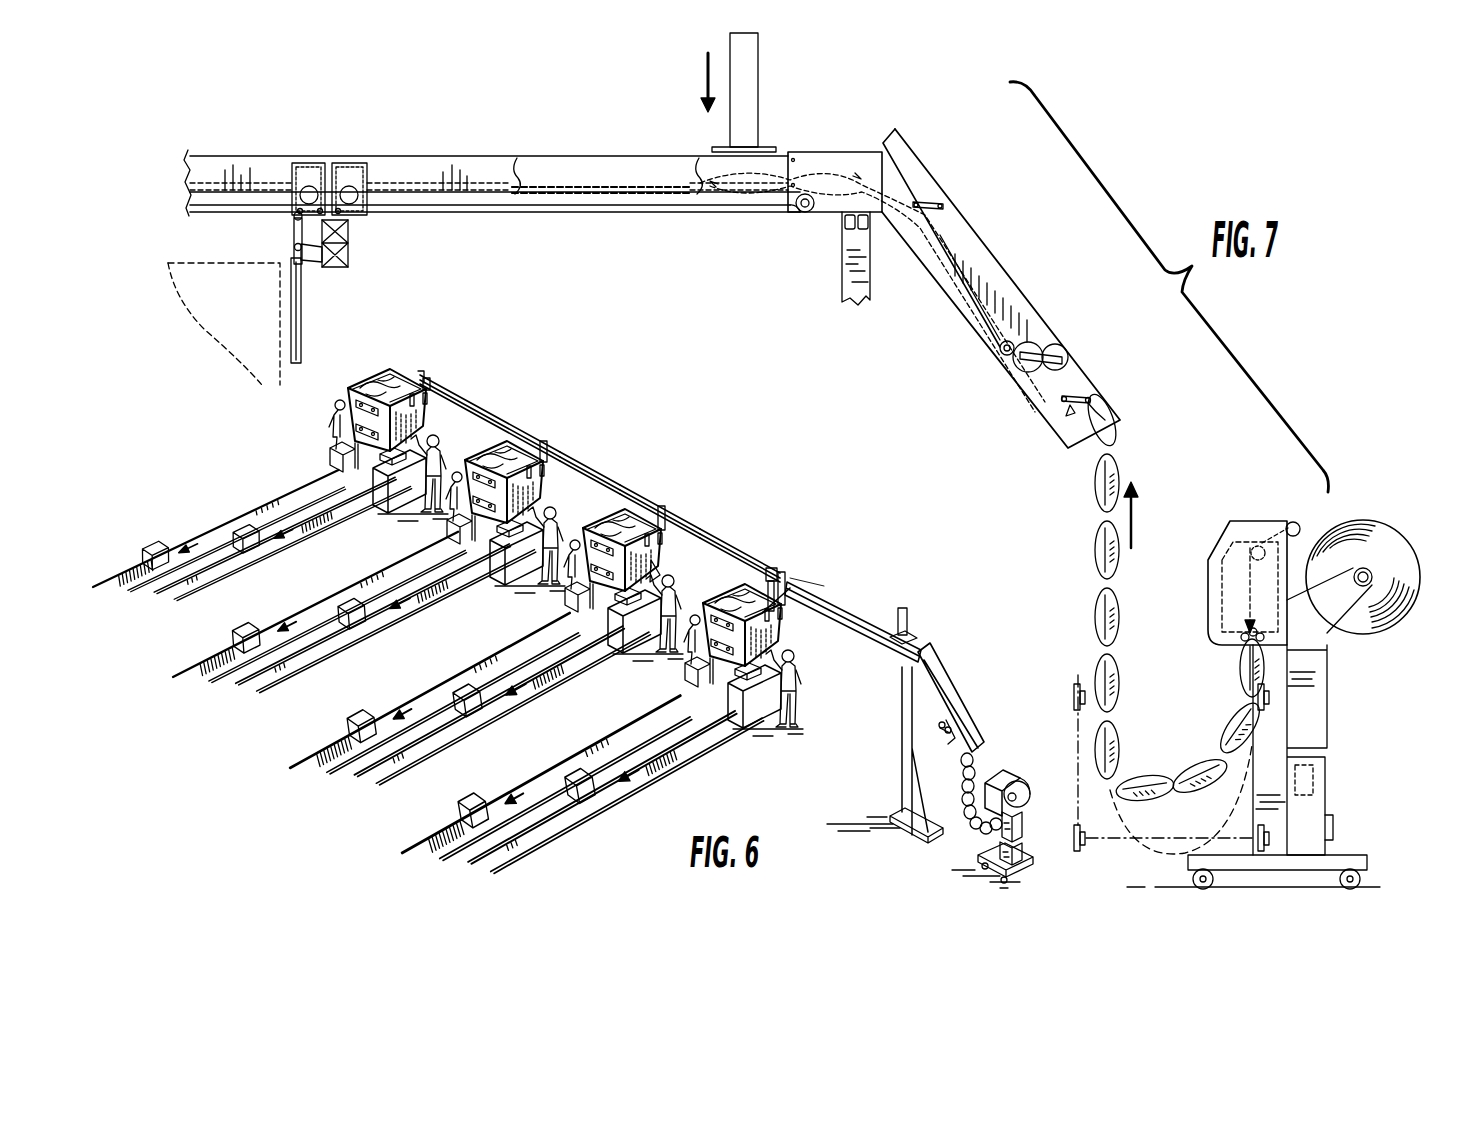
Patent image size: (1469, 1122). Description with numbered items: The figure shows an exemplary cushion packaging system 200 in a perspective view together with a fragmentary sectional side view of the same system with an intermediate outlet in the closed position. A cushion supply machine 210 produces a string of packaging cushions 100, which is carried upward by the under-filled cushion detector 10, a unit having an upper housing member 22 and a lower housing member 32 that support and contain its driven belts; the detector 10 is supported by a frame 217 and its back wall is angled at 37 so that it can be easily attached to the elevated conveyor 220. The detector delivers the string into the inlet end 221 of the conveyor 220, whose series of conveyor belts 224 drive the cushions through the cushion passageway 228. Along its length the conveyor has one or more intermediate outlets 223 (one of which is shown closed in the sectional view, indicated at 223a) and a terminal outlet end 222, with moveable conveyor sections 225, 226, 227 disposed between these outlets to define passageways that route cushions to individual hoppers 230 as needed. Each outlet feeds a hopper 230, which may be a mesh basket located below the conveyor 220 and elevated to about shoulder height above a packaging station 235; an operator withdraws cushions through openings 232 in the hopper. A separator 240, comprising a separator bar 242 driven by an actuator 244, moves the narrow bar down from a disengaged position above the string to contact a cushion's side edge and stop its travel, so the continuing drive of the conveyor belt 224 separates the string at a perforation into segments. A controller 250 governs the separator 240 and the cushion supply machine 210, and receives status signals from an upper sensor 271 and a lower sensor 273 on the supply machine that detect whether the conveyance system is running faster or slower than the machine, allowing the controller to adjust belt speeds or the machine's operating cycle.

In FIG. 7, the under-filled cushion detector 10 is at (1029, 292).
In FIG. 6, the under-filled cushion detector 10 is at (963, 702).
In FIG. 7, the upper housing member 22 is at (1087, 360).
In FIG. 7, the lower housing member 32 is at (1026, 404).
In FIG. 7, the angled back wall 37 is at (885, 216).
In FIG. 7, the packaging cushions 100 is at (1120, 628).
In FIG. 6, the cushion packaging system 200 is at (139, 531).
In FIG. 7, the cushion supply machine 210 is at (1227, 500).
In FIG. 6, the cushion supply machine 210 is at (998, 762).
In FIG. 6, the frame 217 is at (898, 770).
In FIG. 7, the conveyor 220 is at (486, 141).
In FIG. 6, the conveyor 220 is at (762, 528).
In FIG. 7, the inlet end 221 is at (784, 183).
In FIG. 6, the outlet end 222 is at (421, 370).
In FIG. 7, the intermediate outlets 223 is at (329, 160).
In FIG. 6, the inclined beam 223a is at (792, 581).
In FIG. 7, the conveyor belts 224 is at (612, 188).
In FIG. 6, the moveable conveyor section 225 is at (701, 527).
In FIG. 6, the moveable conveyor section 226 is at (607, 481).
In FIG. 6, the moveable conveyor section 227 is at (530, 440).
In FIG. 7, the cushion passageway 228 is at (655, 172).
In FIG. 6, the cushion passageway 228 is at (552, 430).
In FIG. 7, the hoppers 230 is at (233, 323).
In FIG. 6, the hoppers 230 is at (480, 445).
In FIG. 6, the openings 232 is at (650, 578).
In FIG. 6, the packaging station 235 is at (901, 735).
In FIG. 7, the separator 240 is at (774, 66).
In FIG. 6, the separator 240 is at (908, 623).
In FIG. 7, the separator bar 242 is at (786, 150).
In FIG. 7, the actuator 244 is at (758, 132).
In FIG. 7, the controller 250 is at (1324, 806).
In FIG. 7, the upper sensor 271 is at (1270, 700).
In FIG. 7, the lower sensor 273 is at (1078, 846).